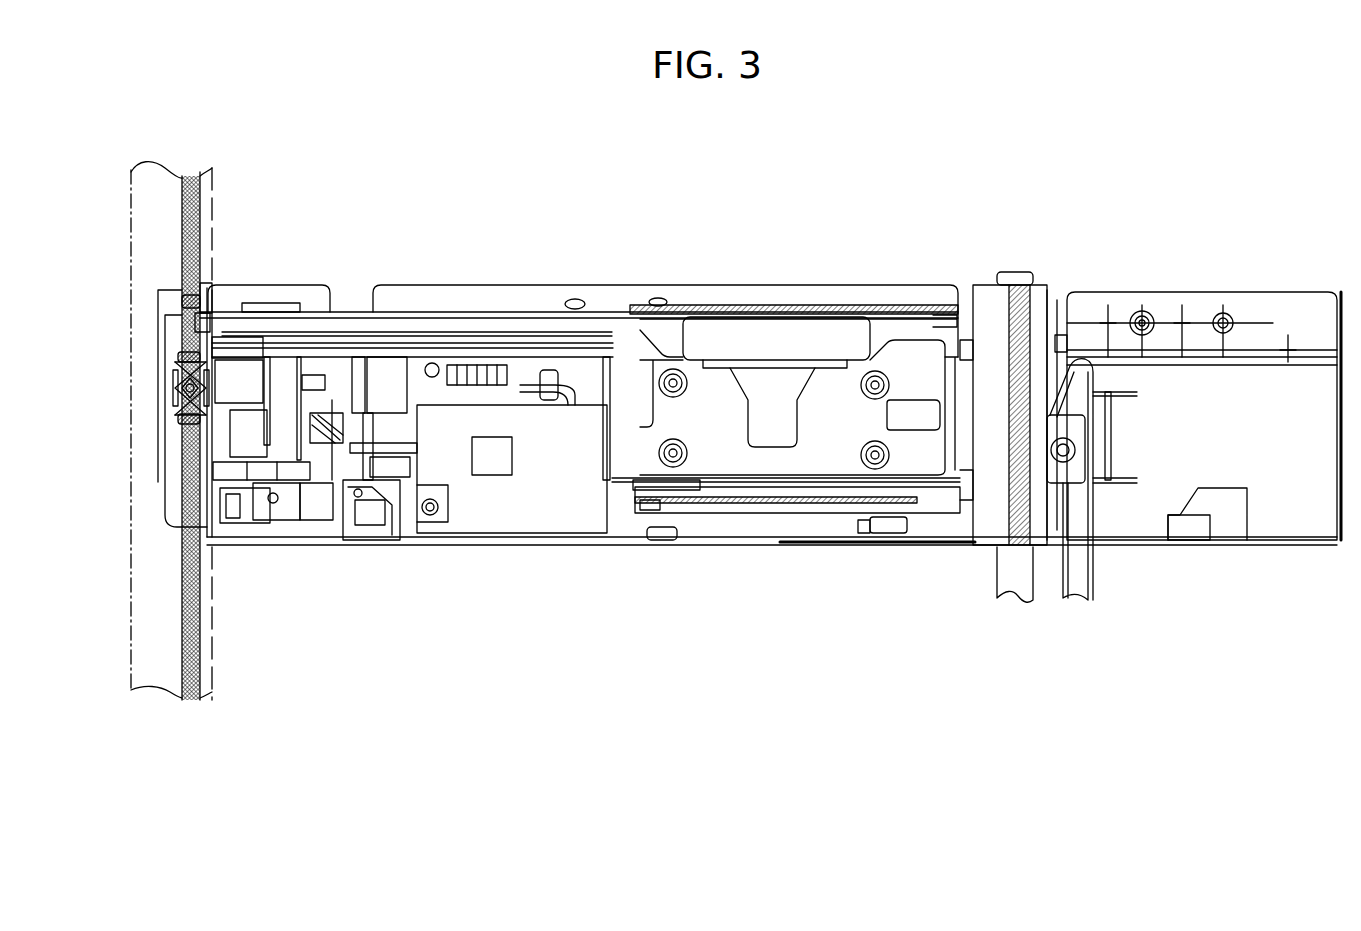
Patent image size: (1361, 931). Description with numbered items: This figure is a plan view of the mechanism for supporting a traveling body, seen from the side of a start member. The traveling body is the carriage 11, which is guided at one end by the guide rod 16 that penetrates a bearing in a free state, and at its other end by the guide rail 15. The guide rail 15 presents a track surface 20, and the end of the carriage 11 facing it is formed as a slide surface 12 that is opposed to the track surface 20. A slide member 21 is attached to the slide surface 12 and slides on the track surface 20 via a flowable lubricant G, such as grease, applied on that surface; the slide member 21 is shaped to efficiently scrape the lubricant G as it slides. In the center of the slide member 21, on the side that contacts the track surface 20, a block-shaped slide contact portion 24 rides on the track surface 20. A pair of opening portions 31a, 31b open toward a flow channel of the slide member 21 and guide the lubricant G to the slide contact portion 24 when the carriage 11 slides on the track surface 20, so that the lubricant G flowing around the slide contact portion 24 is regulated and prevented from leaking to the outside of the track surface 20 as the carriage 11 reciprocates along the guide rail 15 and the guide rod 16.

The carriage 11 is at (745, 238).
The slide surface 12 is at (173, 500).
The guide rail 15 is at (213, 247).
The guide rod 16 is at (1005, 577).
The track surface 20 is at (148, 197).
The slide member 21 is at (130, 379).
The slide contact portion 24 is at (175, 392).
The opening portion 31a is at (177, 342).
The opening portion 31b is at (183, 427).
The lubricant G is at (216, 611).